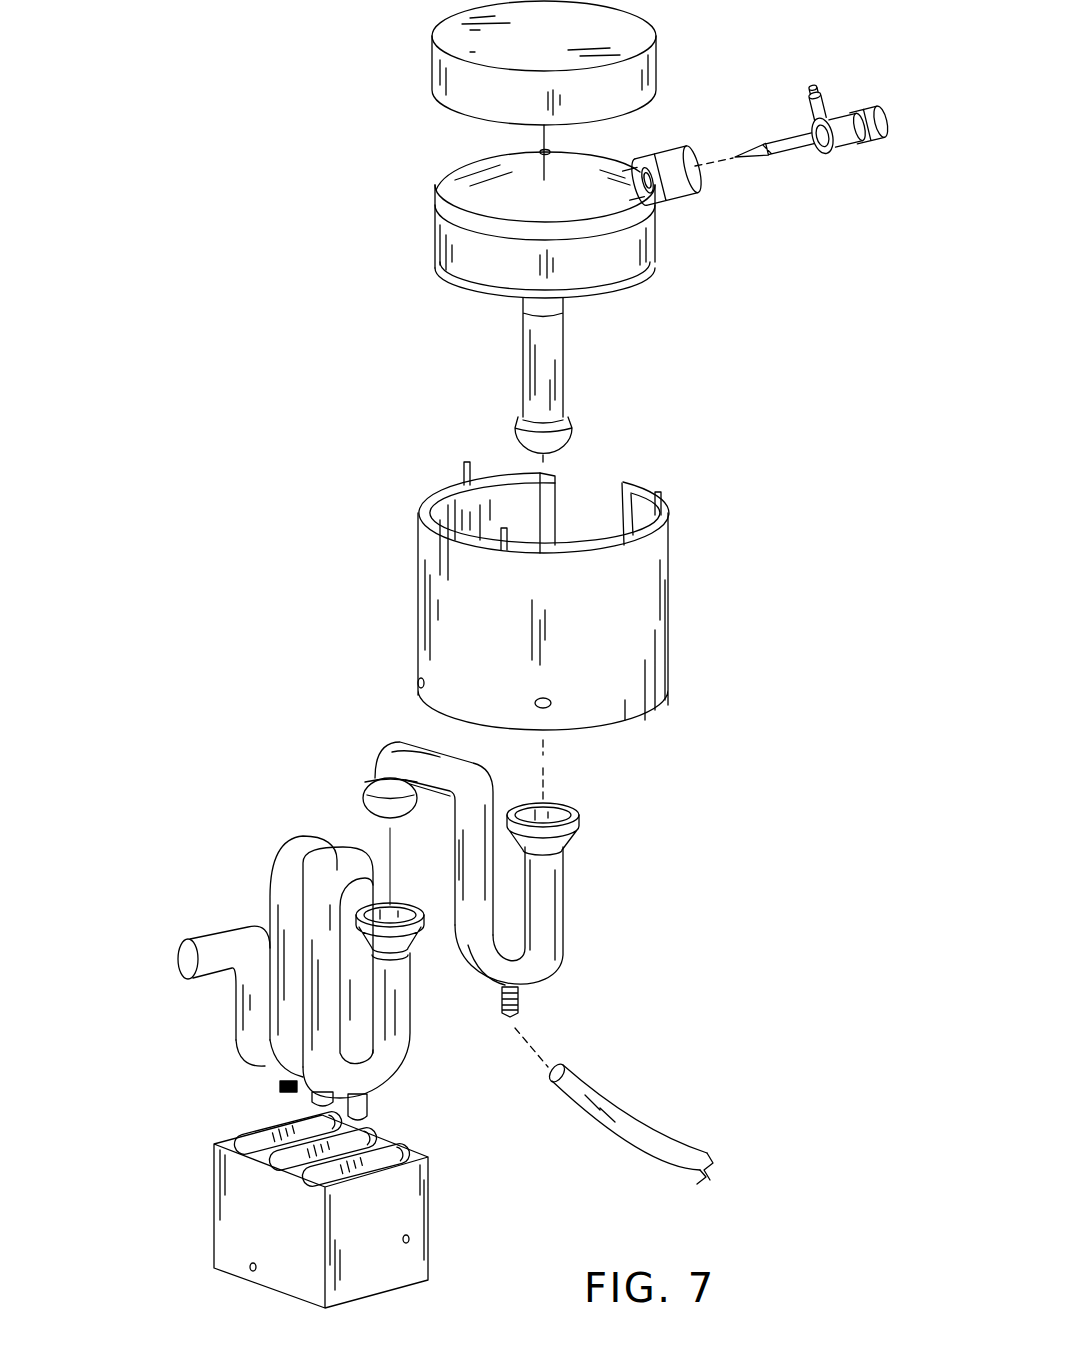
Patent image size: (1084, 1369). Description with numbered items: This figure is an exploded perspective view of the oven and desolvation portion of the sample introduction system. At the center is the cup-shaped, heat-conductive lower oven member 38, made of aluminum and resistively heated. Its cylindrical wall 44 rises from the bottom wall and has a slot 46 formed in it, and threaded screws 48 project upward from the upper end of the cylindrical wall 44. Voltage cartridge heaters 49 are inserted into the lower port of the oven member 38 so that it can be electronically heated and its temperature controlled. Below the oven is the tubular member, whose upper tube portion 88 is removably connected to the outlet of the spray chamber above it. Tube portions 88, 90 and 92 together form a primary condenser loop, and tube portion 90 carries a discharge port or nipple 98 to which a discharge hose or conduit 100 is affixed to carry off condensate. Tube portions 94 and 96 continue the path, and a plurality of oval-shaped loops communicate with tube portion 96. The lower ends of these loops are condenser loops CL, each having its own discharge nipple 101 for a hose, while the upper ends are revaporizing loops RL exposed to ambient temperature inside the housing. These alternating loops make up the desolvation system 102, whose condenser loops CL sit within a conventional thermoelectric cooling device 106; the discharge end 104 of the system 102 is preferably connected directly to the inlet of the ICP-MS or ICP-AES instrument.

The lower oven member 38 is at (541, 566).
The cylindrical wall 44 is at (598, 624).
The slot 46 is at (587, 485).
The threaded screws 48 is at (673, 496).
The voltage cartridge heaters 49 is at (537, 703).
The tube portion 88 is at (507, 932).
The tube portion 90 is at (527, 968).
The tube portion 92 is at (472, 877).
The tube portion 94 is at (430, 758).
The tube portion 96 is at (382, 772).
The discharge port or nipple 98 is at (510, 1017).
The discharge hose or conduit 100 is at (612, 1110).
The discharge port or nipple 101 is at (283, 1093).
The desolvation system 102 is at (278, 965).
The discharge end 104 is at (163, 971).
The thermoelectric cooling device 106 is at (408, 1205).
The revaporizing loops RL is at (327, 840).
The condenser loops CL is at (280, 1063).